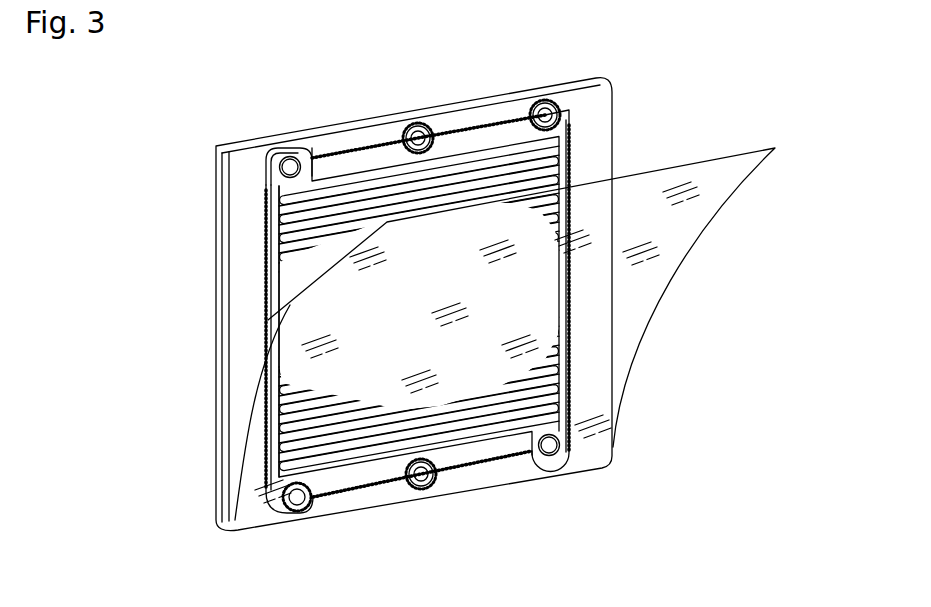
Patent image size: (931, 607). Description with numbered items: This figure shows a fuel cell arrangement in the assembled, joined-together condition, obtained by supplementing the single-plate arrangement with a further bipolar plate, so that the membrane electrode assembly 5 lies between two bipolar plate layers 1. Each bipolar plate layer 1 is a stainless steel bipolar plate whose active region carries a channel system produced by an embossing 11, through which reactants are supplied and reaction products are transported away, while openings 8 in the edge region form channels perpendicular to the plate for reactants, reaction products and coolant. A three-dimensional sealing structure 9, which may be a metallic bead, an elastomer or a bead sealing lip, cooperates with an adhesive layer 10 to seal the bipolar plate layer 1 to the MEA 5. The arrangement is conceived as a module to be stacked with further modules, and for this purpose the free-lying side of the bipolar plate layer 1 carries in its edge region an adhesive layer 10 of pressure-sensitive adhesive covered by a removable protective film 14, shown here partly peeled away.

The bipolar plate layer 1 is at (343, 478).
The membrane electrode assembly 5 is at (220, 232).
The opening 8 is at (563, 110).
The three-dimensional sealing structure 9 is at (268, 272).
The adhesive layer 10 is at (268, 320).
The embossing 11 is at (350, 197).
The removable protective film 14 is at (675, 220).